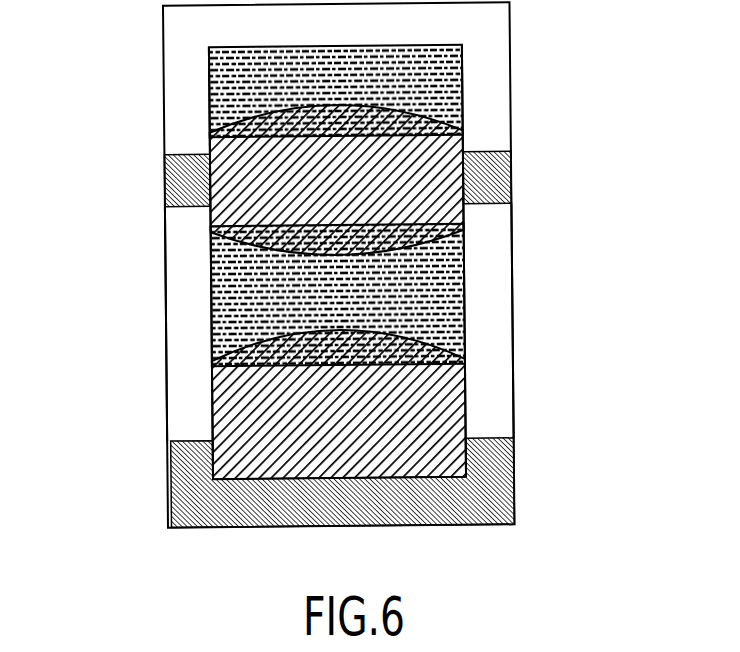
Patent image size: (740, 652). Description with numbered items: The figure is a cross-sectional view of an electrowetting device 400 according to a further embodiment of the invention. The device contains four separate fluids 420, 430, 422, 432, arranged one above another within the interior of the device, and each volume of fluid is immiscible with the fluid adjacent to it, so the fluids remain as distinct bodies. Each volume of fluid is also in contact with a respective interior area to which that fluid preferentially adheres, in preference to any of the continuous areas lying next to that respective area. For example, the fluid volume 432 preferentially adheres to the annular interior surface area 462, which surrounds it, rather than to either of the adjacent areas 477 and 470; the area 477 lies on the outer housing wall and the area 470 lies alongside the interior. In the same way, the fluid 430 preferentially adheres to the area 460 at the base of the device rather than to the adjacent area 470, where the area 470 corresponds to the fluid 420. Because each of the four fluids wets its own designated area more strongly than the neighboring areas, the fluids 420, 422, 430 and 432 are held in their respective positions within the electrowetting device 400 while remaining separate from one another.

The electrowetting device 400 is at (342, 302).
The fluid 420 is at (438, 305).
The fluid 422 is at (443, 100).
The fluid 430 is at (457, 380).
The fluid volume 432 is at (213, 142).
The area 460 is at (500, 512).
The annular interior surface area 462 is at (512, 174).
The area 470 is at (495, 400).
The area 477 is at (490, 45).